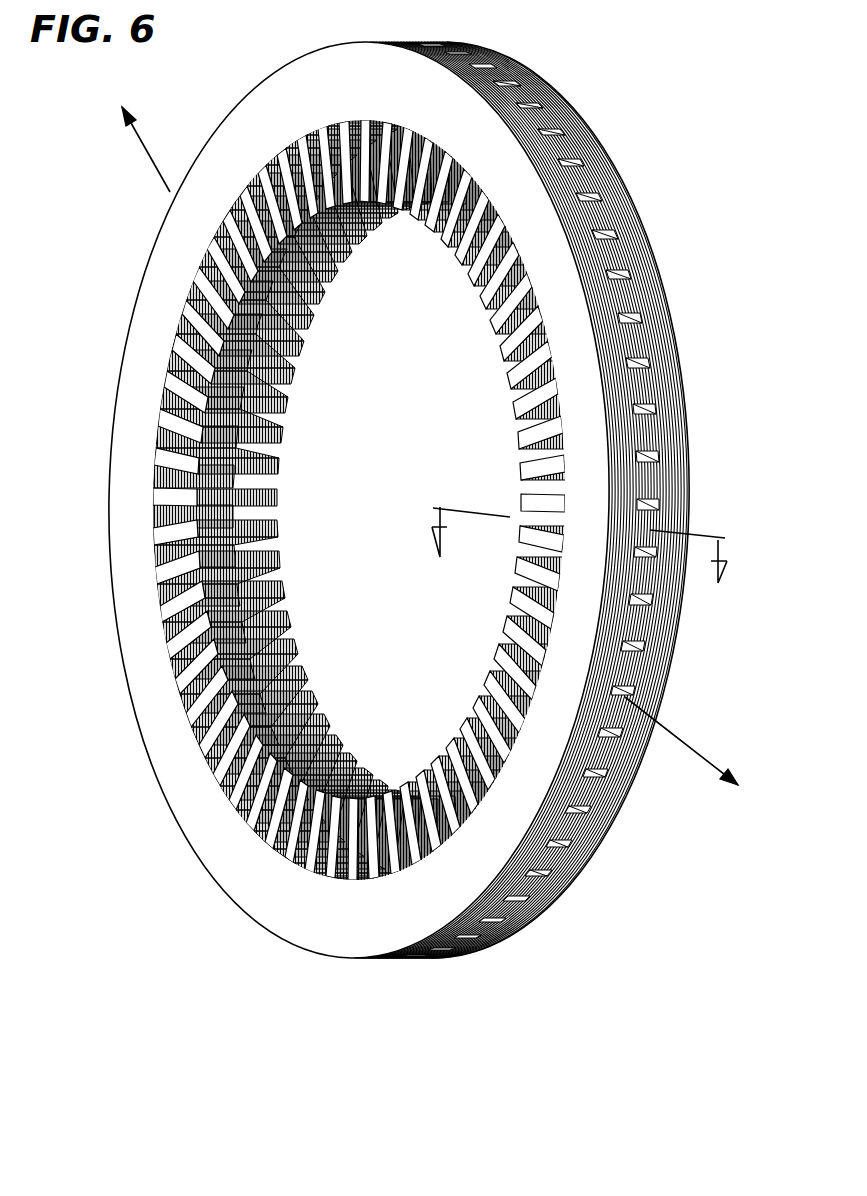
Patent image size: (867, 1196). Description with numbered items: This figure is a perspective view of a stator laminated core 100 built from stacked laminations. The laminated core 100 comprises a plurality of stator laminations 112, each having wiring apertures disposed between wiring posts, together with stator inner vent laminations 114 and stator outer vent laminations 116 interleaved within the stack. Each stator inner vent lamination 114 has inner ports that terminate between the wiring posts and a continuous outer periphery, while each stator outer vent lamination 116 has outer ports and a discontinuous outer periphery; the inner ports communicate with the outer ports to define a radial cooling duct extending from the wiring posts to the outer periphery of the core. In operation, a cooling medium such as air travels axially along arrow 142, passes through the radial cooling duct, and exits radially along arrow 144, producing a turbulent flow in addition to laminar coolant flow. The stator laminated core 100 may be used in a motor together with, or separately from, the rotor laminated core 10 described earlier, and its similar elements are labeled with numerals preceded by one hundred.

The laminated core 100 is at (445, 500).
The stator lamination 112 is at (566, 500).
The stator inner vent lamination 114 is at (620, 362).
The stator outer vent lamination 116 is at (650, 390).
The arrow 142 is at (304, 317).
The arrow 144 is at (152, 159).
The laminated core 10 is at (581, 544).